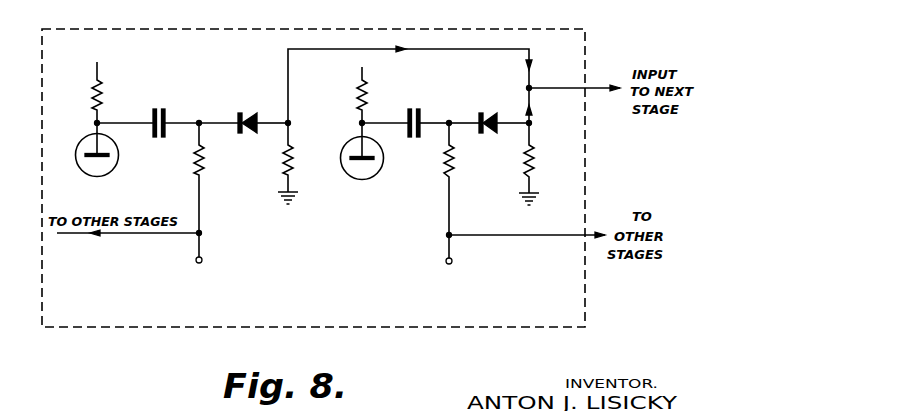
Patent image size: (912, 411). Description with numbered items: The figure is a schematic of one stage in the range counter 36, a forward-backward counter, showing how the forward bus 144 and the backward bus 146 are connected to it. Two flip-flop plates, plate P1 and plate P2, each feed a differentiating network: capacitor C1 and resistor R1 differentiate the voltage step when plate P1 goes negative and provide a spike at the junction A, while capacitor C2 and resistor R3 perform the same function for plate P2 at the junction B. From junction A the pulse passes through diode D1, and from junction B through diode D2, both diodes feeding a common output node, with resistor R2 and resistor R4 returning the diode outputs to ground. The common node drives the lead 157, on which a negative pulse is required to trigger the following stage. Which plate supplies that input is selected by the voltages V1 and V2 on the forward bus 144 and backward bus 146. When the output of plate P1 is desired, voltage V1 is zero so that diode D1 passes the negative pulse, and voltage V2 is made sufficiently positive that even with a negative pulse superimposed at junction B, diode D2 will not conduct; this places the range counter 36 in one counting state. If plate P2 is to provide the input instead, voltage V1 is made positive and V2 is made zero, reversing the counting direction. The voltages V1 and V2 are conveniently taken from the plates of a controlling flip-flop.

The range counter 36 is at (42, 305).
The forward bus 144 is at (196, 236).
The backward bus 146 is at (500, 282).
The lead 157 is at (557, 87).
The plate P1 is at (108, 151).
The plate P2 is at (349, 148).
The capacitor C1 is at (170, 110).
The capacitor C2 is at (424, 111).
The diode D1 is at (257, 112).
The diode D2 is at (502, 101).
The resistor R1 is at (206, 159).
The resistor R2 is at (298, 163).
The resistor R3 is at (464, 179).
The resistor R4 is at (540, 164).
The junction A is at (201, 121).
The junction B is at (451, 121).
The voltage V1 is at (210, 251).
The voltage V2 is at (461, 253).